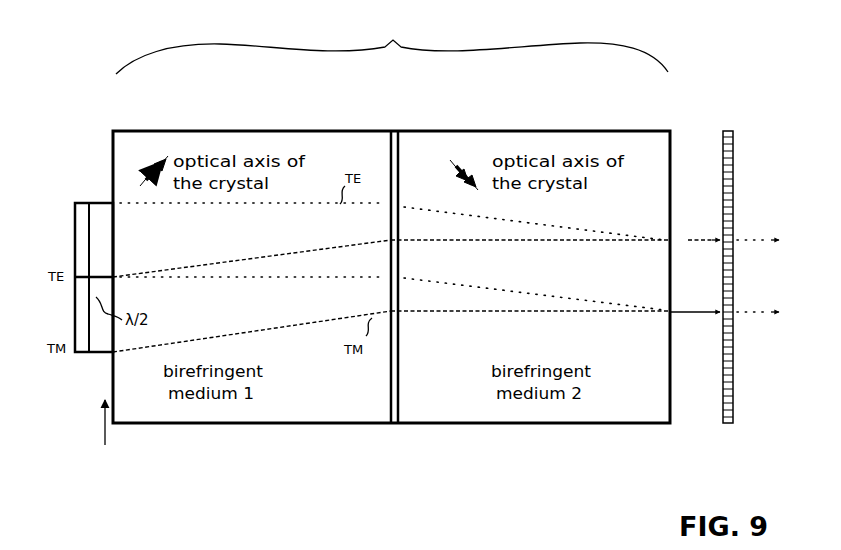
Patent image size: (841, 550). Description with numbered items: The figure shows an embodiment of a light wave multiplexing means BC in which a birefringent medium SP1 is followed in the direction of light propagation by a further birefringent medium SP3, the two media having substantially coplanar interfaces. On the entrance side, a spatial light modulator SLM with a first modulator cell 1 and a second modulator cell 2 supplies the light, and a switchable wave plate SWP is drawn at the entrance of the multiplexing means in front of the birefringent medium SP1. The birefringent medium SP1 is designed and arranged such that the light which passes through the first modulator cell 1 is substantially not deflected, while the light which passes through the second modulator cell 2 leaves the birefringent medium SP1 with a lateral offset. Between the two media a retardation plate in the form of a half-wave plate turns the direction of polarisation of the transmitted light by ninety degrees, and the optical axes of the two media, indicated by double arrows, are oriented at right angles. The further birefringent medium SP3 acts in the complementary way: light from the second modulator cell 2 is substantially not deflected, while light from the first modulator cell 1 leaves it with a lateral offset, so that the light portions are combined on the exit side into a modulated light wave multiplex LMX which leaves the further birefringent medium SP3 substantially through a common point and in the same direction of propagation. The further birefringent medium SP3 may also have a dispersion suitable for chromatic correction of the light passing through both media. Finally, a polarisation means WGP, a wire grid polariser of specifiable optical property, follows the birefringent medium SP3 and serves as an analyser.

The first modulator cell 1 is at (82, 232).
The second modulator cell 2 is at (82, 331).
The spatial light modulator SLM is at (83, 410).
The switchable wave plate SWP is at (101, 435).
The light wave multiplexing means BC is at (392, 48).
The wire grid polariser WGP is at (733, 412).
The modulated light wave multiplex LMX is at (745, 243).
The birefringent medium SP1 is at (370, 408).
The further birefringent medium SP3 is at (640, 408).